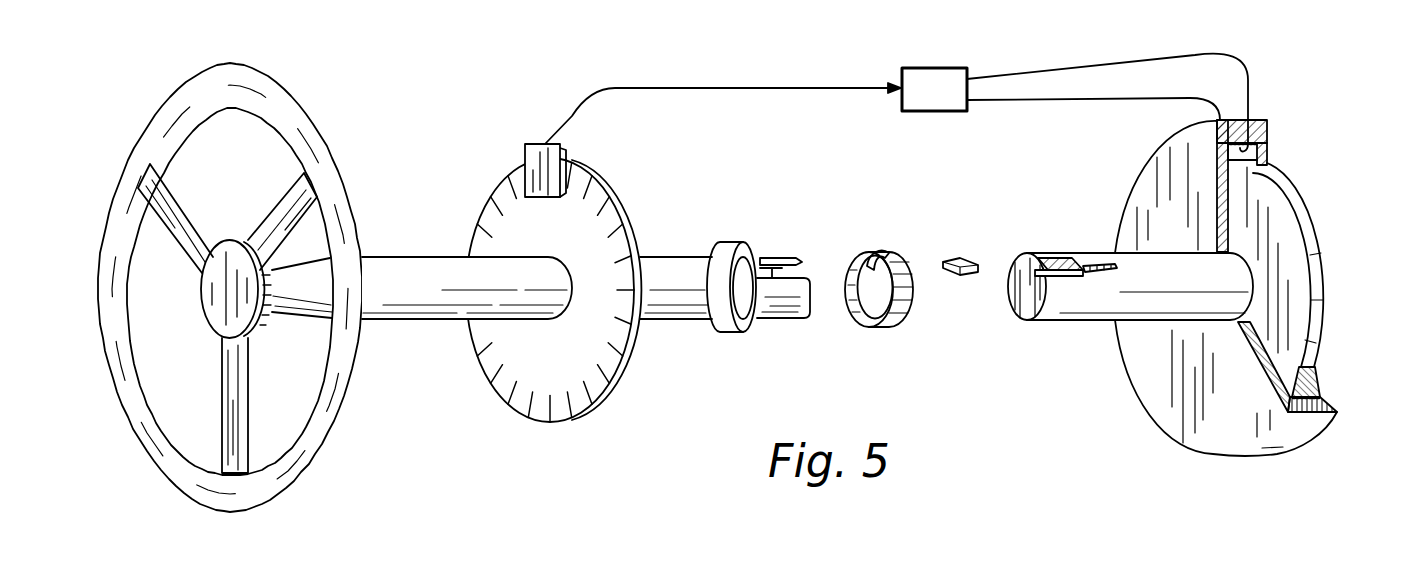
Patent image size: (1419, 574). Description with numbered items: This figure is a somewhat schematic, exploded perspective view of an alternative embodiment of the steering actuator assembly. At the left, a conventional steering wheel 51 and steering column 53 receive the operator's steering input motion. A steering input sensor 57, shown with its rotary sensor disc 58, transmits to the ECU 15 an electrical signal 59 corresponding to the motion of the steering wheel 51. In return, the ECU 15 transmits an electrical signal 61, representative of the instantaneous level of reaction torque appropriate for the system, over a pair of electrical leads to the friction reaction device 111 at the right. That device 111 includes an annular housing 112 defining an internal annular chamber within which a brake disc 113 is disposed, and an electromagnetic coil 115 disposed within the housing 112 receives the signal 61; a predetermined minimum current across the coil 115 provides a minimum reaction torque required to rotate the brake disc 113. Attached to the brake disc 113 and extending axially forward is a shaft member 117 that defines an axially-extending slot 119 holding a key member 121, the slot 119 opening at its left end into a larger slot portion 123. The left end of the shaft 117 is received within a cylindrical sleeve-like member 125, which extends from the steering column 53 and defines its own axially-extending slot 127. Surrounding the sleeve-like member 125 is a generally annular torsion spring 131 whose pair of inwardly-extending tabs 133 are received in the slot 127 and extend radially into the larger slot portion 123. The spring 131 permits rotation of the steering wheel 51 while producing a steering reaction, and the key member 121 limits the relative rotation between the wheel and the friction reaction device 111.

The steering wheel 51 is at (187, 107).
The steering column 53 is at (400, 272).
The steering input sensor 57 is at (527, 150).
The rotary sensor disc 58 is at (490, 362).
The electrical signal 59 is at (750, 88).
The ECU 15 is at (940, 112).
The electrical signal 61 is at (1086, 66).
The sleeve-like member 125 is at (780, 310).
The axially-extending slot 127 is at (780, 258).
The torsion spring 131 is at (895, 282).
The tabs 133 is at (862, 262).
The key member 121 is at (958, 260).
The friction reaction device 111 is at (1202, 322).
The annular housing 112 is at (1157, 392).
The electromagnetic coil 115 is at (1267, 158).
The brake disc 113 is at (1278, 245).
The shaft member 117 is at (1173, 268).
The larger slot portion 123 is at (1052, 257).
The axially-extending slot 119 is at (1097, 275).